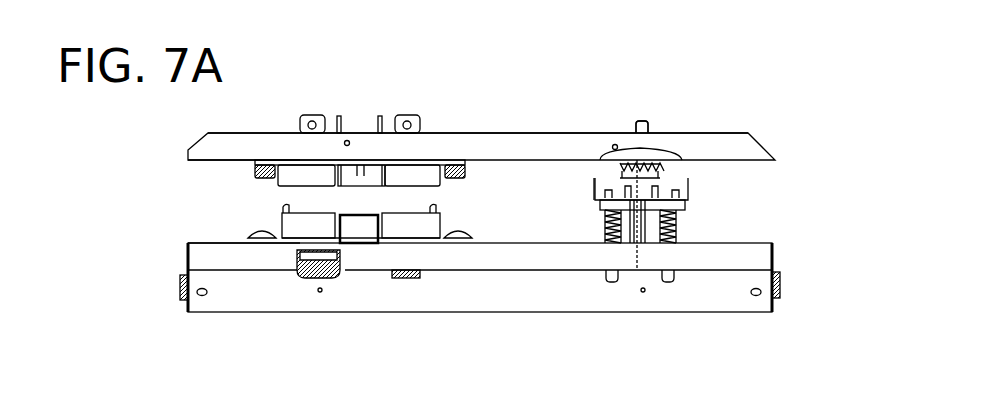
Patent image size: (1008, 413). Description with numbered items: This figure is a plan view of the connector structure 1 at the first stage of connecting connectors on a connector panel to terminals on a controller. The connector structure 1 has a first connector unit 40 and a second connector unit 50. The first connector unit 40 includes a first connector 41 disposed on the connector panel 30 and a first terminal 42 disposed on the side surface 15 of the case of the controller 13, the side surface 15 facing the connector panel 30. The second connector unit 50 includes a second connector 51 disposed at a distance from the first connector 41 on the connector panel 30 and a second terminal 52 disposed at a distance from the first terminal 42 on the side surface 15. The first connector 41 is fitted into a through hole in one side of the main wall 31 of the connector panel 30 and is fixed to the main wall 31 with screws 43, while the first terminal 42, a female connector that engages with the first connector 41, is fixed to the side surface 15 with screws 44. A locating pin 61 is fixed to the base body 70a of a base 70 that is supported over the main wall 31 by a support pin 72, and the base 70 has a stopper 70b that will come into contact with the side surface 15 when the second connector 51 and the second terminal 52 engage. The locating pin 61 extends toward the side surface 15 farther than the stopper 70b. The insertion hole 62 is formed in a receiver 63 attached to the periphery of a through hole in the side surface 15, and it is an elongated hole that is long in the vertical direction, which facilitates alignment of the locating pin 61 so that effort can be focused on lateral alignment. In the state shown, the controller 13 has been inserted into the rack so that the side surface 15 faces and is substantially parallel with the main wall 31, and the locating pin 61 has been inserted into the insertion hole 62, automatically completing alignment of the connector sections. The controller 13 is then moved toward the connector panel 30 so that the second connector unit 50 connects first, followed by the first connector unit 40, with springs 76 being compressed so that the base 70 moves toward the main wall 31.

The connector structure 1 is at (565, 42).
The first connector unit 40 is at (436, 118).
The second connector unit 50 is at (587, 115).
The controller 13 is at (760, 138).
The side surface 15 is at (205, 163).
The connector panel 30 is at (782, 258).
The main wall 31 is at (212, 240).
The first connector 41 is at (358, 225).
The first terminal 42 is at (370, 175).
The screws 43 is at (258, 245).
The screws 44 is at (268, 164).
The second connector 51 is at (637, 272).
The second terminal 52 is at (623, 138).
The locating pin 61 is at (683, 130).
The insertion hole 62 is at (641, 120).
The receiver 63 is at (642, 127).
The base 70 is at (697, 183).
The base body 70a is at (688, 203).
The stopper 70b is at (596, 185).
The support pin 72 is at (612, 284).
The springs 76 is at (605, 222).